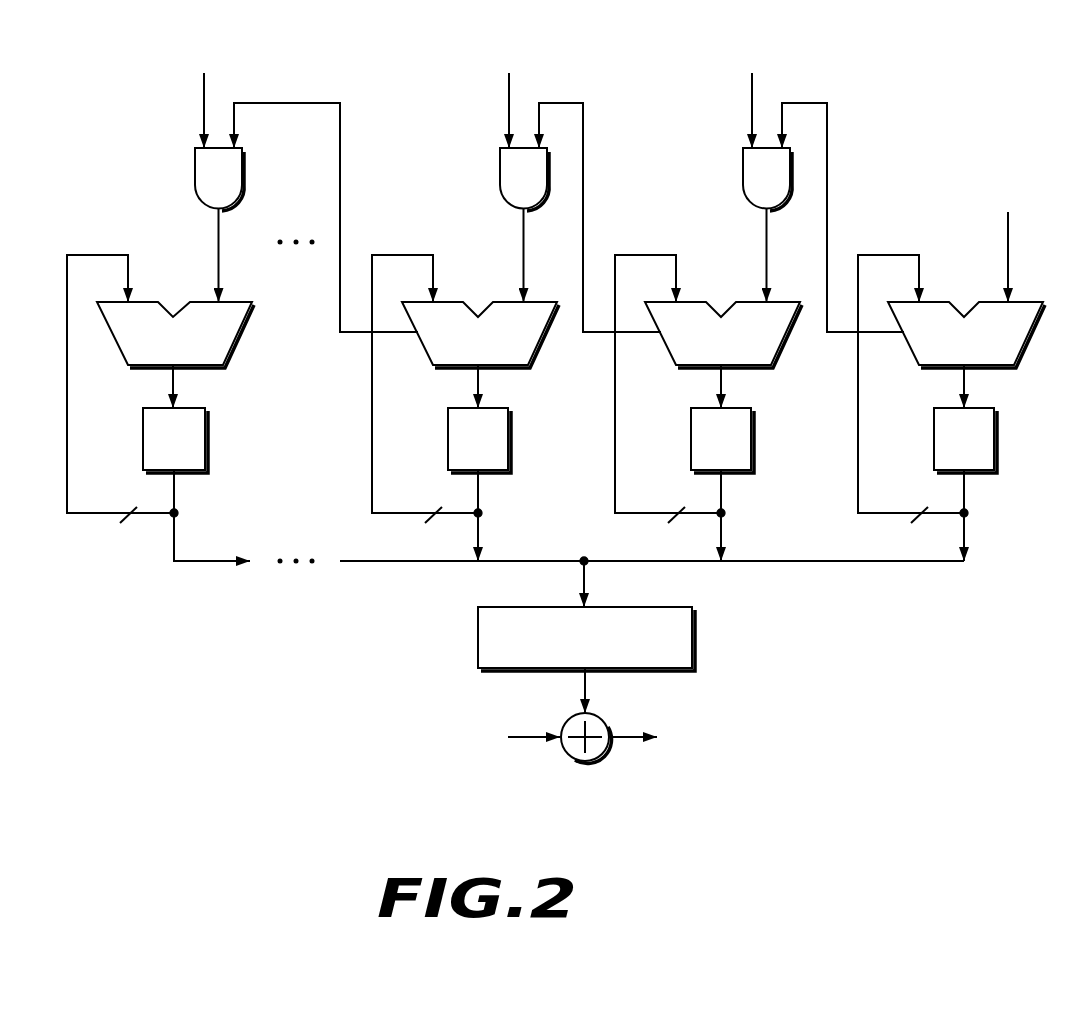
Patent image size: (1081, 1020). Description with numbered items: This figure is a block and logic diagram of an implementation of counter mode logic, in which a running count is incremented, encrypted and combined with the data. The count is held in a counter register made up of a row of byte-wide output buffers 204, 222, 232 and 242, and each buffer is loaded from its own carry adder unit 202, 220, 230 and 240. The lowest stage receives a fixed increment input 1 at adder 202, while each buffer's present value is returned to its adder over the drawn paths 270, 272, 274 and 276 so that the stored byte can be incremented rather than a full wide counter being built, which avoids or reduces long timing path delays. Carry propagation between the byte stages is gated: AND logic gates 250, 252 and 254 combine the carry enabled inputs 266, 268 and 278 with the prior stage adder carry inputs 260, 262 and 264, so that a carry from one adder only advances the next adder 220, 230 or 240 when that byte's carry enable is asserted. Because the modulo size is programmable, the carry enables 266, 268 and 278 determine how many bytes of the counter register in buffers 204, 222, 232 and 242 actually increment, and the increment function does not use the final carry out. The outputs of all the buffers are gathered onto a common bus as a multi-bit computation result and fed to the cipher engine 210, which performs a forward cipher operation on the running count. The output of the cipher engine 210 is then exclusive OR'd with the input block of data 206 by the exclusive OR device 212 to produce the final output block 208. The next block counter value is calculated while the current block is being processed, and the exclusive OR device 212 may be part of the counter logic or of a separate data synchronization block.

The constant input value 1 is at (1008, 240).
The carry adder unit 202 is at (996, 368).
The buffer B1 204 is at (996, 432).
The input block of data 206 is at (477, 738).
The final output block 208 is at (694, 738).
The cipher engine 210 is at (695, 630).
The exclusive OR device 212 is at (600, 757).
The carry adder unit 220 is at (755, 368).
The buffer B2 222 is at (753, 430).
The carry adder unit 230 is at (512, 368).
The buffer B3 232 is at (510, 430).
The carry adder unit 240 is at (207, 368).
The buffer B16 242 is at (207, 430).
The AND logic gate 250 is at (743, 186).
The AND logic gate 252 is at (500, 186).
The AND logic gate 254 is at (195, 185).
The prior stage adder carry input 260 is at (827, 222).
The prior stage adder carry input 262 is at (583, 218).
The prior stage adder carry input 264 is at (340, 218).
The carry enabled input 266 is at (752, 110).
The carry enabled input 268 is at (509, 110).
The feedback path 270 is at (858, 418).
The feedback path 272 is at (615, 417).
The feedback path 274 is at (372, 417).
The feedback path 276 is at (67, 417).
The carry enabled input 278 is at (204, 110).